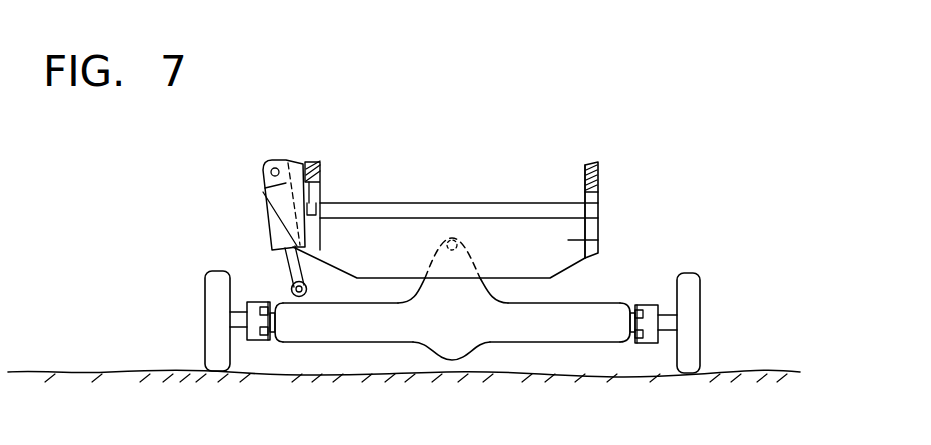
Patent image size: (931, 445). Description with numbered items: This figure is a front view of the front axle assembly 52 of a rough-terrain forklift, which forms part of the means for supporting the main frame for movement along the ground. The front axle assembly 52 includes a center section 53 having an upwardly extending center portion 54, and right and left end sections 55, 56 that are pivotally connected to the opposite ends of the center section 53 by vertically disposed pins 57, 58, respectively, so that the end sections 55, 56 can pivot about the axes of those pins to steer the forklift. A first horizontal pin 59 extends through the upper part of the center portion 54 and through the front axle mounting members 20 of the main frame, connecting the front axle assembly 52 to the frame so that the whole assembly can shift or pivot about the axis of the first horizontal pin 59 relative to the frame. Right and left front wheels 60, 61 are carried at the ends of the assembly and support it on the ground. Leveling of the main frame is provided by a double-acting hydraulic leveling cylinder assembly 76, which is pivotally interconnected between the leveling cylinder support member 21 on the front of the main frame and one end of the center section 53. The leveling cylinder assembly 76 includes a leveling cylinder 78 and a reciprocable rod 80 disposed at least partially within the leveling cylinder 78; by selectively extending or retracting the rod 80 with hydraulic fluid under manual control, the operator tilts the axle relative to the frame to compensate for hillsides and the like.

The front axle mounting members 20 is at (575, 240).
The leveling cylinder support member 21 is at (307, 163).
The front axle assembly 52 is at (452, 333).
The center section 53 is at (453, 362).
The upwardly extending center portion 54 is at (470, 295).
The right end section 55 is at (257, 342).
The left end section 56 is at (650, 345).
The vertically disposed pin 57 is at (267, 312).
The vertically disposed pin 58 is at (633, 313).
The first horizontal pin 59 is at (453, 239).
The right front wheel 60 is at (217, 312).
The left front wheel 61 is at (695, 325).
The hydraulic leveling cylinder assembly 76 is at (242, 205).
The leveling cylinder 78 is at (277, 239).
The reciprocable rod 80 is at (308, 273).